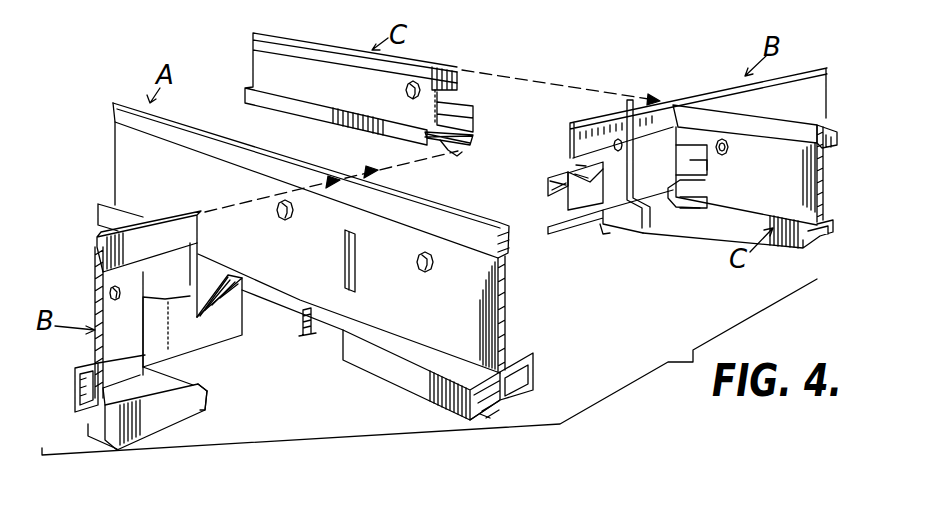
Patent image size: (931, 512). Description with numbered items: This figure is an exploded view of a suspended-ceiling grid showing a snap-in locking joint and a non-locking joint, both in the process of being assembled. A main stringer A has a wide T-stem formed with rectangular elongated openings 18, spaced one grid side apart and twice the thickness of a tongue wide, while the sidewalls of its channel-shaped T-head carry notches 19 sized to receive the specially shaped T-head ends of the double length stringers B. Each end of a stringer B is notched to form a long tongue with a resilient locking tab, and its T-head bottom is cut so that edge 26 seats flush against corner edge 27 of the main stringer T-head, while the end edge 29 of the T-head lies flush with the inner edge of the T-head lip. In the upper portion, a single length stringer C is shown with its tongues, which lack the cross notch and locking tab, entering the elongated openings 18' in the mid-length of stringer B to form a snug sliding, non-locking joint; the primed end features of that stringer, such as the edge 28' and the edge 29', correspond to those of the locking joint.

The opening 18 is at (373, 261).
The elongated opening 18' is at (669, 151).
The notch 19 is at (345, 337).
The edge 26 is at (161, 380).
The corner edge 27 is at (328, 315).
The lip 28' is at (477, 127).
The end edge 29 is at (232, 413).
The lip hook 29' is at (461, 162).